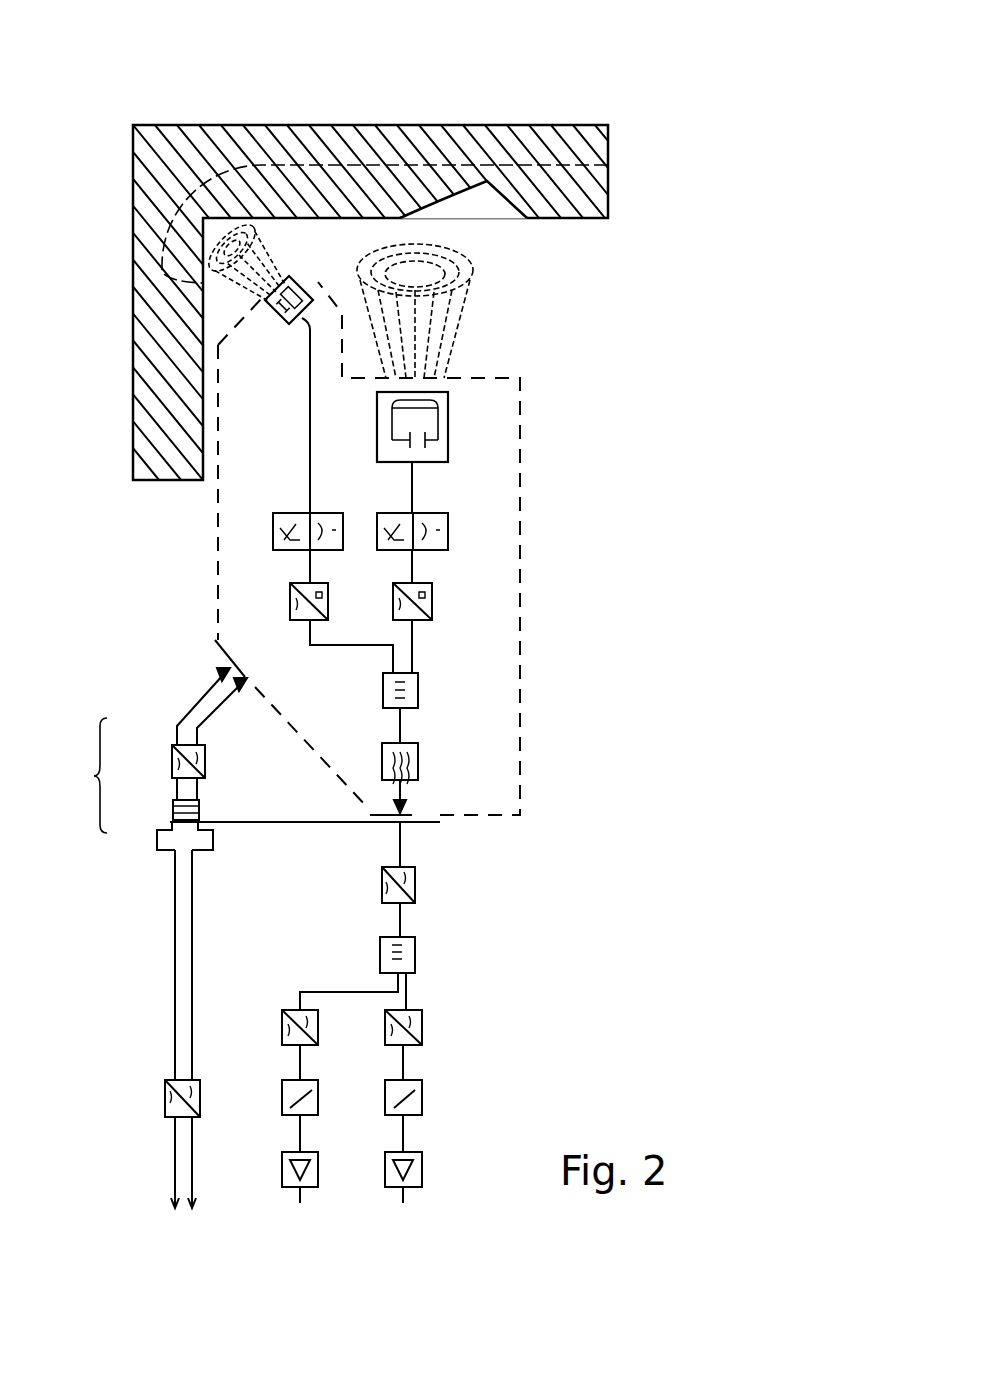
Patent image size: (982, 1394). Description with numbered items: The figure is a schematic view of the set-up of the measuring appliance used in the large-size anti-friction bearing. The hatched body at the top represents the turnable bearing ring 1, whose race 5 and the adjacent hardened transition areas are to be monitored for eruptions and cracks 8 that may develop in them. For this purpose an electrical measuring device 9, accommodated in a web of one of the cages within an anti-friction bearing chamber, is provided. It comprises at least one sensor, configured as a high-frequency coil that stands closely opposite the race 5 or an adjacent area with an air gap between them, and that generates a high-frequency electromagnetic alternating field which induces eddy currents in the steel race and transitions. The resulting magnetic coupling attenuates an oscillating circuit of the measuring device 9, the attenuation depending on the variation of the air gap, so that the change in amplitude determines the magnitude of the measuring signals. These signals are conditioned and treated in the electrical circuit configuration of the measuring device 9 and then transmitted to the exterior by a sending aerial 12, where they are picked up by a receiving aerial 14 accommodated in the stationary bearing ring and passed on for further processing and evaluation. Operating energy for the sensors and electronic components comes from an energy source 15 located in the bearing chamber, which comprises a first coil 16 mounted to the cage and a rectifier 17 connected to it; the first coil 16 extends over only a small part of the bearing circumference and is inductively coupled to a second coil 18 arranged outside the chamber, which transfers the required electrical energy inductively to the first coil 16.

The turnable bearing ring 1 is at (347, 147).
The race 5 is at (560, 226).
The cracks 8 is at (487, 212).
The measuring device 9 is at (520, 567).
The sending aerial 12 is at (404, 795).
The receiving aerial 14 is at (404, 845).
The energy source 15 is at (144, 938).
The first coil 16 is at (171, 768).
The rectifier 17 is at (178, 805).
The second coil 18 is at (157, 838).